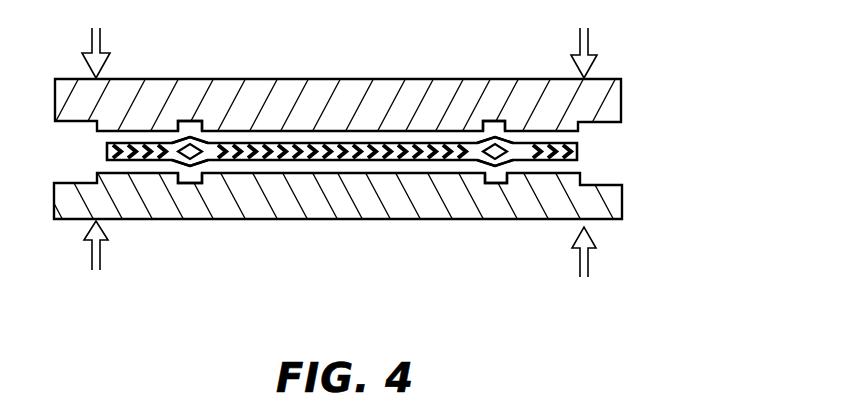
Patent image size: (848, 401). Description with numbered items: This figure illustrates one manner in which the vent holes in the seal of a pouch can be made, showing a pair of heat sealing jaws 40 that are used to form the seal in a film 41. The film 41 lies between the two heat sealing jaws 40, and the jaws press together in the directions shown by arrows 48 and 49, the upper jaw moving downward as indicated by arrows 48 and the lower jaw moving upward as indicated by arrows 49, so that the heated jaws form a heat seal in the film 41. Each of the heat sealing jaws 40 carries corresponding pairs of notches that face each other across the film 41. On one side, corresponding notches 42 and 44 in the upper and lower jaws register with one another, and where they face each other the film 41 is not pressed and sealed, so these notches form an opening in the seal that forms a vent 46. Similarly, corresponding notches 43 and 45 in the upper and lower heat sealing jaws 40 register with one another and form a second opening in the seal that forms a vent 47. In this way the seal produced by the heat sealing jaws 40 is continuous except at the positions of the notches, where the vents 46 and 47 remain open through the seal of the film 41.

The heat sealing jaws 40 is at (636, 92).
The film 41 is at (600, 153).
The notch 42 is at (185, 108).
The notch 43 is at (496, 108).
The notch 44 is at (192, 196).
The notch 45 is at (497, 198).
The vent 46 is at (212, 168).
The vent 47 is at (478, 169).
The arrow 48 is at (91, 40).
The arrow 49 is at (100, 262).